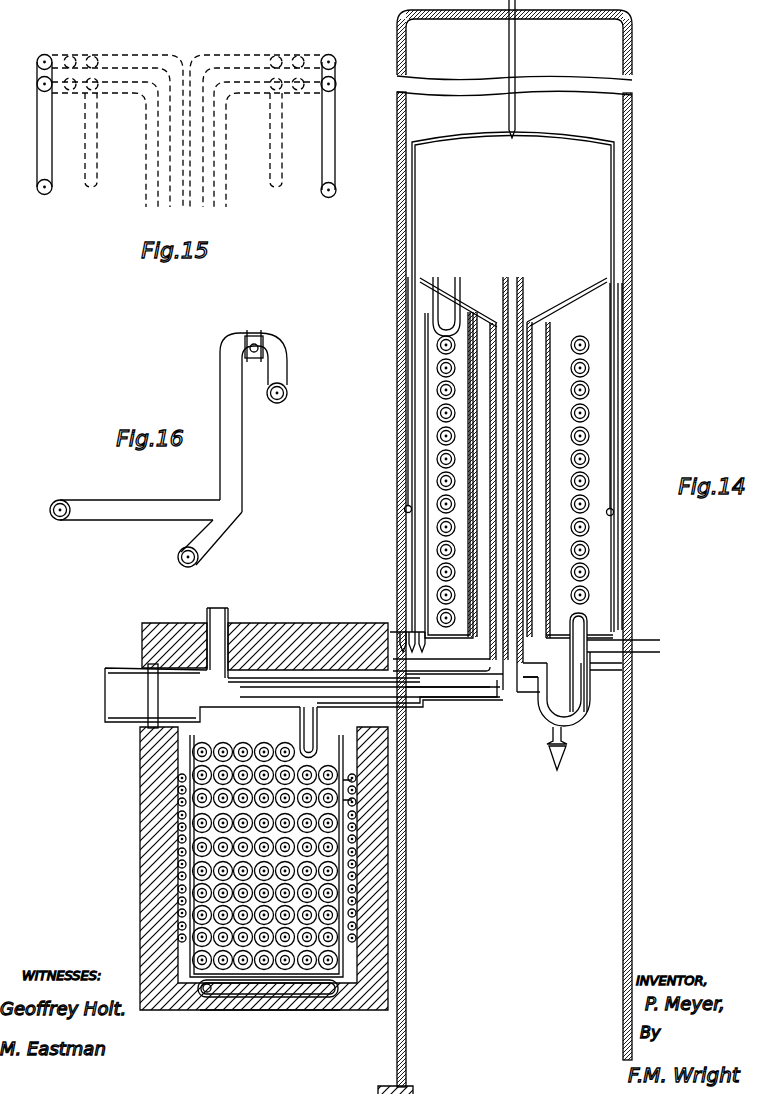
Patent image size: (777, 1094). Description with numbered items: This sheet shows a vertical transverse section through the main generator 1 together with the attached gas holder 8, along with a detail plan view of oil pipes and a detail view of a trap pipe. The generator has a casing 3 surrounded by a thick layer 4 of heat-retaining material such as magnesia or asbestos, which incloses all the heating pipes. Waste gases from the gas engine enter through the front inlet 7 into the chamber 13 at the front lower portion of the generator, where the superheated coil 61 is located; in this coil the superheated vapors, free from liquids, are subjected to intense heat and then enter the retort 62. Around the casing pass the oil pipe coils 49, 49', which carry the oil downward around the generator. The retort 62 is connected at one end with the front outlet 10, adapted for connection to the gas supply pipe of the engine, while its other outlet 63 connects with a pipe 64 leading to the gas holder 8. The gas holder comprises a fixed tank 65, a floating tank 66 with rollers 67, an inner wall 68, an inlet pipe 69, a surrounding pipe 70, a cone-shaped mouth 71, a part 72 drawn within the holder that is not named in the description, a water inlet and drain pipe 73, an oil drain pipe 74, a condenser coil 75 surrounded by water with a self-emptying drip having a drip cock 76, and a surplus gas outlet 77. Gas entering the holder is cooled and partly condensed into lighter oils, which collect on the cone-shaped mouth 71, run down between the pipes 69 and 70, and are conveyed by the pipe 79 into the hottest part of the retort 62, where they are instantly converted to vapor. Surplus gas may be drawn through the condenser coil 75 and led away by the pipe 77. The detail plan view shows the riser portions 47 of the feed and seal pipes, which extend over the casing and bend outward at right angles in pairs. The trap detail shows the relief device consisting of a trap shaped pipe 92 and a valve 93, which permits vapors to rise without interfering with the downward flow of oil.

In FIG. 14, the main generator 1 is at (218, 1012).
In FIG. 14, the casing 3 is at (356, 958).
In FIG. 14, the layer of heat retaining material 4 is at (304, 643).
In FIG. 14, the front inlet 7 is at (155, 689).
In FIG. 14, the gas holder 8 is at (522, 178).
In FIG. 14, the front outlet 10 is at (218, 623).
In FIG. 14, the chamber 13 is at (190, 768).
In FIG. 15, the riser portions 47 is at (178, 189).
In FIG. 14, the coils 49 is at (323, 856).
In FIG. 14, the coils 49' is at (390, 802).
In FIG. 14, the superheated coil 61 is at (180, 828).
In FIG. 14, the retort 62 is at (382, 700).
In FIG. 14, the outlet 63 is at (422, 712).
In FIG. 14, the pipe 64 is at (508, 700).
In FIG. 14, the fixed tank 65 is at (400, 18).
In FIG. 14, the floating tank 66 is at (614, 165).
In FIG. 14, the rollers 67 is at (615, 513).
In FIG. 14, the inner wall 68 is at (552, 386).
In FIG. 14, the inlet pipe 69 is at (502, 292).
In FIG. 14, the surrounding pipe 70 is at (537, 317).
In FIG. 14, the cone-shaped mouth 71 is at (568, 298).
In FIG. 14, the tube 72 is at (616, 339).
In FIG. 14, the water inlet and drain pipe 73 is at (398, 630).
In FIG. 14, the oil drain pipe 74 is at (424, 521).
In FIG. 14, the condenser coil 75 is at (590, 416).
In FIG. 14, the drip cock 76 is at (562, 772).
In FIG. 14, the surplus gas outlet 77 is at (634, 653).
In FIG. 14, the pipe 79 is at (464, 690).
In FIG. 16, the trap shaped pipe 92 is at (284, 386).
In FIG. 16, the valve 93 is at (258, 336).